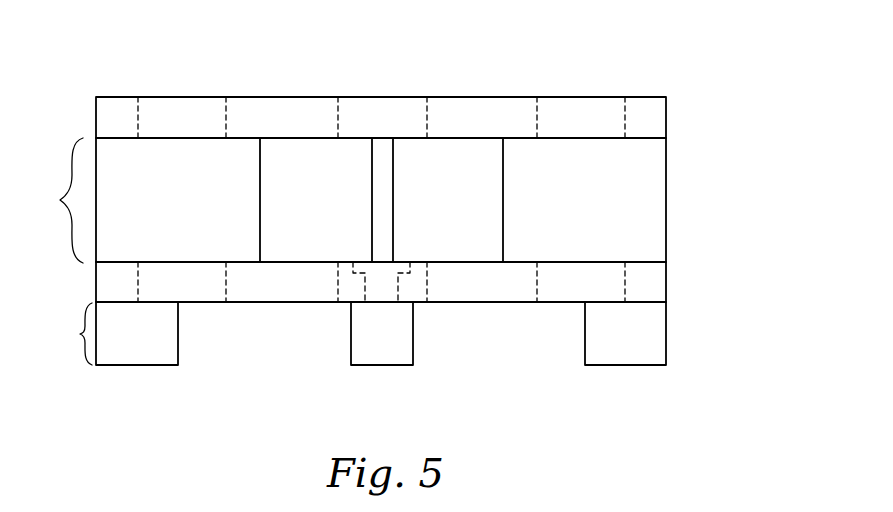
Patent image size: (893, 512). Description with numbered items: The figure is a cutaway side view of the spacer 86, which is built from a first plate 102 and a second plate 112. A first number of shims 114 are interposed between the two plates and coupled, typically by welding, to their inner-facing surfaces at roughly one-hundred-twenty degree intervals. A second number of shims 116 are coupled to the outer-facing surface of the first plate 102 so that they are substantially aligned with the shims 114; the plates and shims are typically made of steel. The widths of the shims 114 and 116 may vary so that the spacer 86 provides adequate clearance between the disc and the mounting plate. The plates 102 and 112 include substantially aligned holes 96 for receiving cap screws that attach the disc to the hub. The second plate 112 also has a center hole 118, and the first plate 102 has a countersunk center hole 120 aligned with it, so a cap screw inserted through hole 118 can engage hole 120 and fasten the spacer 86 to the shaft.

The spacer 86 is at (458, 52).
The holes 96 is at (195, 110).
The first plate 102 is at (653, 282).
The second plate 112 is at (655, 117).
The first number of shims 114 is at (649, 202).
The second number of shims 116 is at (658, 348).
The center hole 118 is at (382, 107).
The countersunk center hole 120 is at (400, 265).